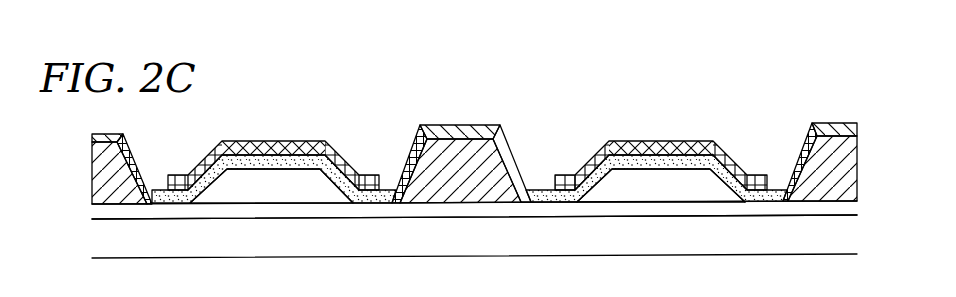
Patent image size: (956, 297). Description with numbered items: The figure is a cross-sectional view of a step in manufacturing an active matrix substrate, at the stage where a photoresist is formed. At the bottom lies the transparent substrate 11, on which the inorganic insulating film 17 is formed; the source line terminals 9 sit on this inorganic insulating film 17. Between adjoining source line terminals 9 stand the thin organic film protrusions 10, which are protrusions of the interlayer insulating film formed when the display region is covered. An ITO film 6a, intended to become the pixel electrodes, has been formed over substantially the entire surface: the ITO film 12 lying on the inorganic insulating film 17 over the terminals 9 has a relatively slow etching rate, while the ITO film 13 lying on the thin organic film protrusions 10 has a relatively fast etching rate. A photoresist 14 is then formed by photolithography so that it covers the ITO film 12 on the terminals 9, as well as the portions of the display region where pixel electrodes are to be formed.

The ITO film 6a is at (467, 139).
The source line terminal 9 is at (657, 182).
The thin organic film protrusion 10 is at (474, 147).
The transparent substrate 11 is at (770, 232).
The ITO film 12 is at (383, 192).
The ITO film 13 is at (464, 126).
The photoresist 14 is at (242, 141).
The inorganic insulating film 17 is at (710, 208).